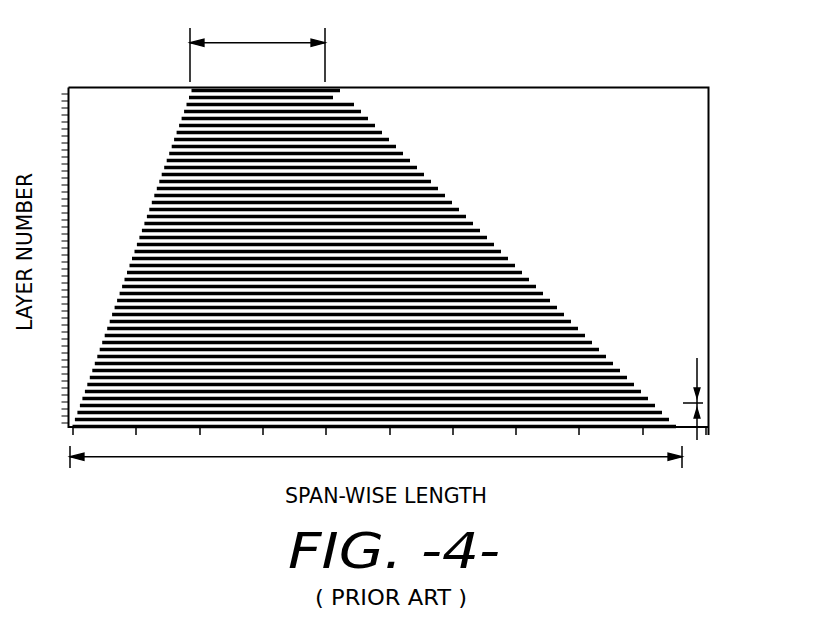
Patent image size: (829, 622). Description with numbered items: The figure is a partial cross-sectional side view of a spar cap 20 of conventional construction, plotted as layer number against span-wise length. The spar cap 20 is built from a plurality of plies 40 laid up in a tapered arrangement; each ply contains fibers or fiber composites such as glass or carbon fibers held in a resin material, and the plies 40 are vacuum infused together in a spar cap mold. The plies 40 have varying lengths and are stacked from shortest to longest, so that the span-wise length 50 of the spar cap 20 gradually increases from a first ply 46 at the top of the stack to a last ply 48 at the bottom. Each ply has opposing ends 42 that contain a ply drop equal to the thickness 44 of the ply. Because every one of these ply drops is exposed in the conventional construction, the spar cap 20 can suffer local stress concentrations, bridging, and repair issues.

The spar cap 20 is at (557, 193).
The plies 40 is at (505, 262).
The opposing ends 42 is at (118, 300).
The thickness 44 is at (698, 370).
The first ply 46 is at (340, 88).
The last ply 48 is at (676, 432).
The span-wise length 50 is at (252, 43).